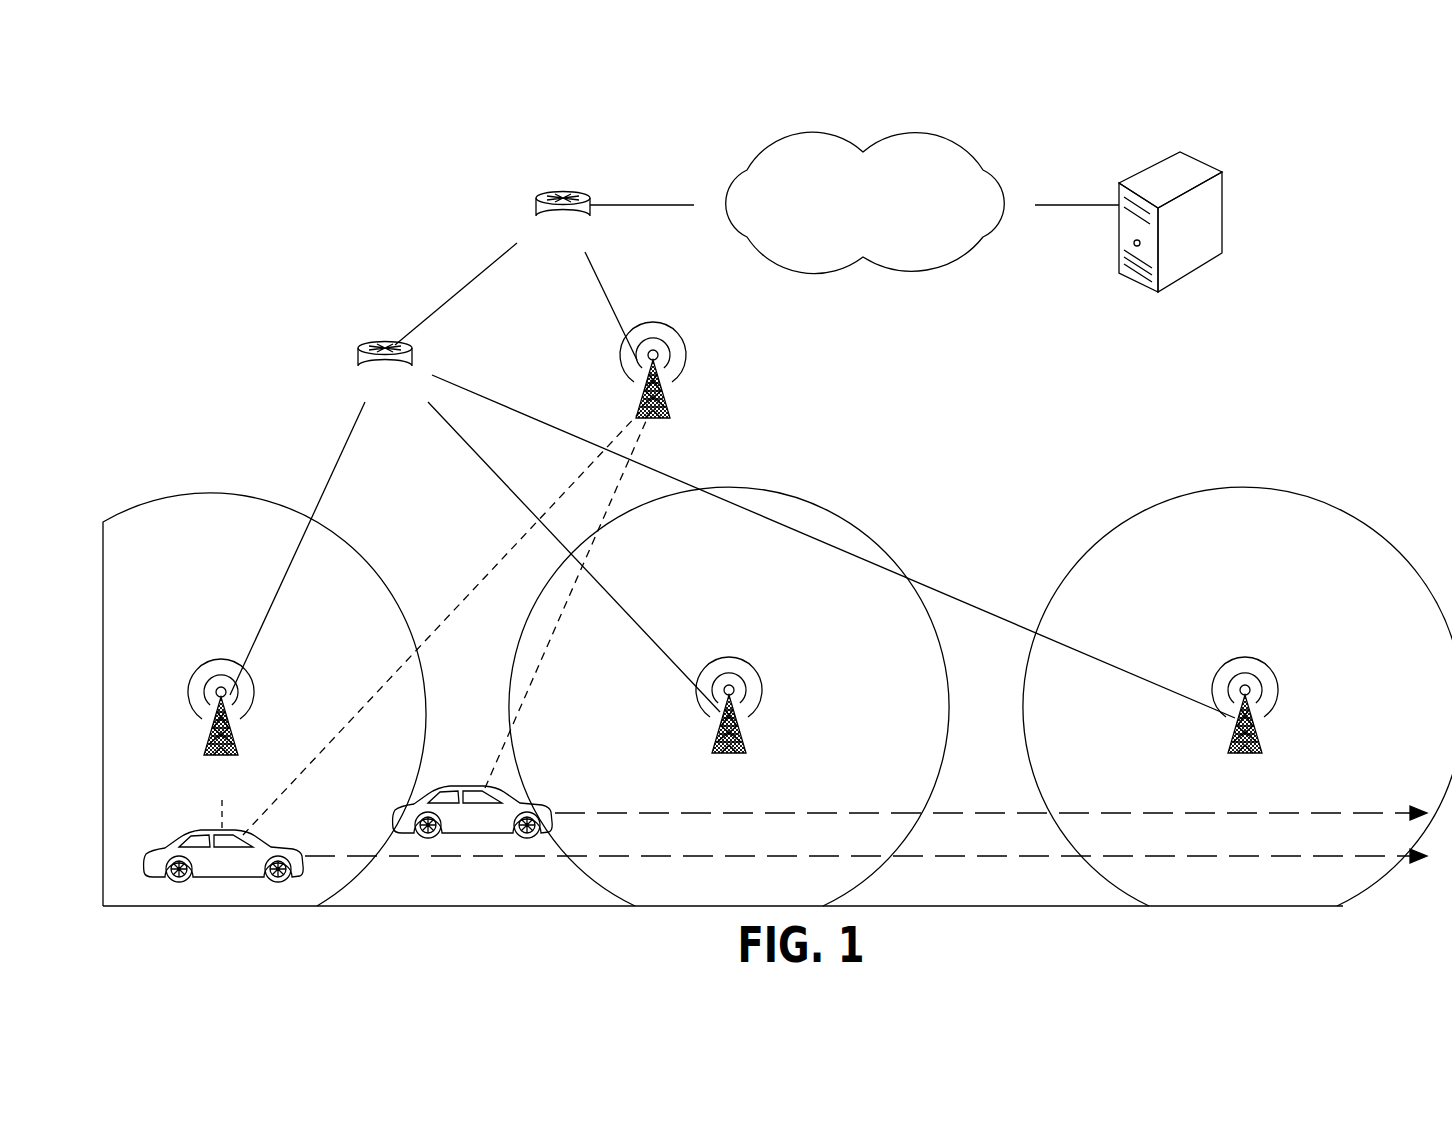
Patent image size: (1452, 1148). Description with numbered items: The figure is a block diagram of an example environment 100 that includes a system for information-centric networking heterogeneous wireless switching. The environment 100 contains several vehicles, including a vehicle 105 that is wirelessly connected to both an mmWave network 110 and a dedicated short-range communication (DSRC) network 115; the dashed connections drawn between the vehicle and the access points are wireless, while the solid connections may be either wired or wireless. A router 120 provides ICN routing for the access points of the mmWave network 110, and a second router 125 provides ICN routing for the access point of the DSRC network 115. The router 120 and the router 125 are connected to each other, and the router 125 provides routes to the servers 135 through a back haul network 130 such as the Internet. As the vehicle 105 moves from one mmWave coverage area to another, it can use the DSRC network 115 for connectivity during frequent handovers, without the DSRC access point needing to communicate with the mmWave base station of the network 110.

The environment 100 is at (1358, 69).
The vehicle 105 is at (222, 852).
The mmWave network 110 is at (230, 490).
The dedicated short-range communication (DSRC) network 115 is at (652, 322).
The router 120 is at (358, 348).
The router 125 is at (537, 195).
The back haul network 130 is at (815, 135).
The servers 135 is at (1180, 152).